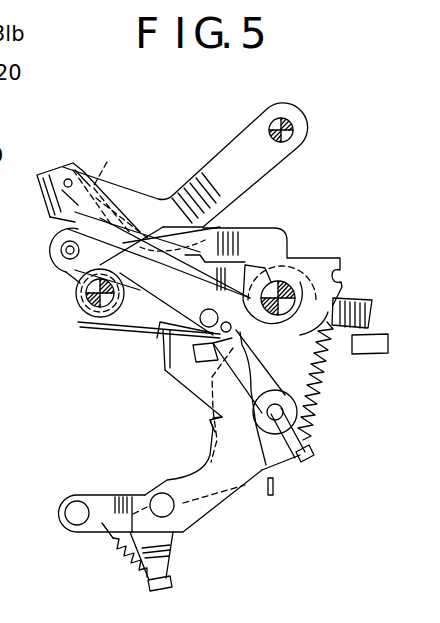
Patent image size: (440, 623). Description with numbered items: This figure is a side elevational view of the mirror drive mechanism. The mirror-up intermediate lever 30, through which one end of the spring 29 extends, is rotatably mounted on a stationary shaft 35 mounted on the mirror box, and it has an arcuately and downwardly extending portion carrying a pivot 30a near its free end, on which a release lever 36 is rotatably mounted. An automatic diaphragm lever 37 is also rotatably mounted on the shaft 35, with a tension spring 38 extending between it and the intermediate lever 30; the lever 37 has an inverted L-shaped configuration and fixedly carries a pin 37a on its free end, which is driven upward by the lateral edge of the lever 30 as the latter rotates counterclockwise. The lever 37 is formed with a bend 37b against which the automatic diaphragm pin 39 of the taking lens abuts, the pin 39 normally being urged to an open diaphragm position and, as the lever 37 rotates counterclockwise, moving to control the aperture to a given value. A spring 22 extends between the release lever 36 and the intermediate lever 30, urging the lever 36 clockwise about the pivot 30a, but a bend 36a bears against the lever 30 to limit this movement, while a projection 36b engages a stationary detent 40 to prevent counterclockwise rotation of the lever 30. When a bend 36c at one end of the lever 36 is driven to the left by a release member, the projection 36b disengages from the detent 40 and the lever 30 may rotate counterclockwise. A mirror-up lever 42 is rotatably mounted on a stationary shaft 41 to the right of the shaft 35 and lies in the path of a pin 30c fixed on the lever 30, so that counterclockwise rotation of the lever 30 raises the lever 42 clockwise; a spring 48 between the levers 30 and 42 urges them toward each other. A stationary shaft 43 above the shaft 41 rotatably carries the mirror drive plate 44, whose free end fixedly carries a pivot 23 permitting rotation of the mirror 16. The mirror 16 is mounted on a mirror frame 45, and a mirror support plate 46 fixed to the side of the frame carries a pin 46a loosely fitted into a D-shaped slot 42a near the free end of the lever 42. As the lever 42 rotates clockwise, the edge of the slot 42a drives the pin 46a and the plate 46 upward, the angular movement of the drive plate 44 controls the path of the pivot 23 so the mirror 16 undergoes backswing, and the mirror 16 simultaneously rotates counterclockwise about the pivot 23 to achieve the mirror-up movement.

The mirror 16 is at (98, 190).
The spring 22 is at (118, 548).
The pivot 23 is at (70, 180).
The spring 29 is at (238, 340).
The mirror-up intermediate lever 30 is at (167, 372).
The pivot 30a is at (170, 510).
The pin 30c is at (160, 335).
The stationary shaft 35 is at (80, 310).
The release lever 36 is at (176, 552).
The bend 36a is at (212, 427).
The projection 36b is at (252, 490).
The bend 36c is at (250, 355).
The automatic diaphragm lever 37 is at (270, 234).
The pin 37a is at (298, 432).
The bend 37b is at (360, 306).
The tension spring 38 is at (330, 332).
The pin 39 is at (388, 345).
The stationary detent 40 is at (276, 490).
The stationary shaft 41 is at (291, 280).
The mirror-up lever 42 is at (243, 273).
The D-shaped slot 42a is at (72, 270).
The stationary shaft 43 is at (291, 141).
The mirror drive plate 44 is at (190, 181).
The mirror frame 45 is at (116, 233).
The mirror support plate 46 is at (62, 221).
The pin 46a is at (66, 250).
The spring 48 is at (122, 331).